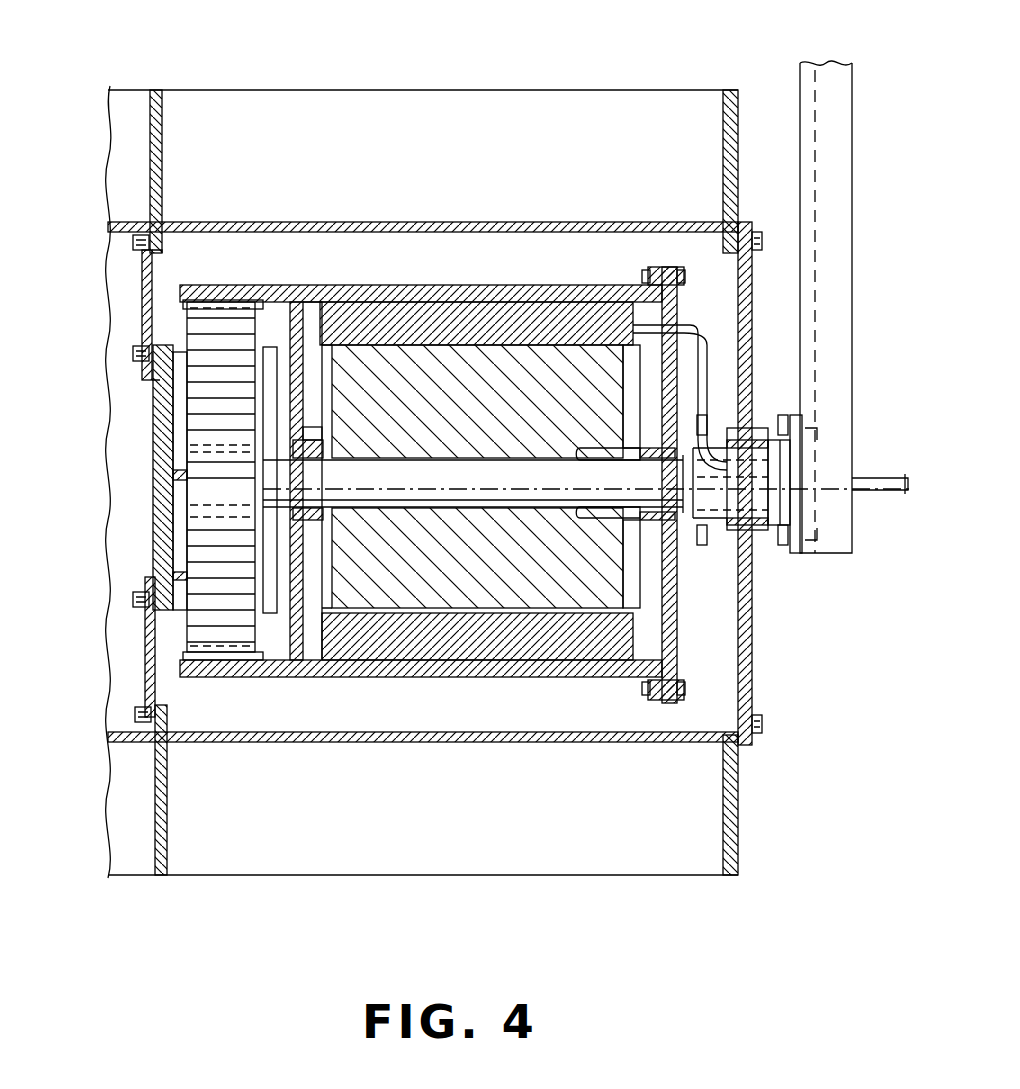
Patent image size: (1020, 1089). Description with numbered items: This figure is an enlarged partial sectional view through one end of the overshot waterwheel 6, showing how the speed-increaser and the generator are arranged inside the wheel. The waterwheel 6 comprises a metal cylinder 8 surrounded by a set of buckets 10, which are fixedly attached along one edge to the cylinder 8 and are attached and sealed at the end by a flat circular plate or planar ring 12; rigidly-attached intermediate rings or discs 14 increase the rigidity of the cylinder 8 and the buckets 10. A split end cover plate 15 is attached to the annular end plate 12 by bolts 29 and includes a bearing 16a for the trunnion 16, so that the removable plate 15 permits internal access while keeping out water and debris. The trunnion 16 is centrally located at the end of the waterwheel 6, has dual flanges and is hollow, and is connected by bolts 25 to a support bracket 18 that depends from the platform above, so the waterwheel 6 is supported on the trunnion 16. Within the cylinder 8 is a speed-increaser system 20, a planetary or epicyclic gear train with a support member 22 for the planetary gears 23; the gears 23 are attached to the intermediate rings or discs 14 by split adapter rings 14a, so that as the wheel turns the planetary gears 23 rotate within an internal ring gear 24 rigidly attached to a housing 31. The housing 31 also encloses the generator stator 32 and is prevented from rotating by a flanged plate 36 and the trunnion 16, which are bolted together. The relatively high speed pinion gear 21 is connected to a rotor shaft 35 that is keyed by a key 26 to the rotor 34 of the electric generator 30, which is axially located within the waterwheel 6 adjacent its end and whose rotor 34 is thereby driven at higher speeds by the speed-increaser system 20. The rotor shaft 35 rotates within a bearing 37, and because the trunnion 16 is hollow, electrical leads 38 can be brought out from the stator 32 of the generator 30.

The overshot waterwheel 6 is at (462, 90).
The metal cylinder 8 is at (452, 222).
The buckets 10 is at (401, 492).
The annular end plate 12 is at (740, 178).
The intermediate rings or discs 14 is at (160, 90).
The split adapter rings 14a is at (140, 262).
The split end cover plate 15 is at (778, 320).
The trunnion 16 is at (752, 422).
The bearing 16a is at (760, 548).
The support bracket 18 is at (852, 205).
The speed-increaser system 20 is at (178, 480).
The pinion gear 21 is at (207, 512).
The support member 22 is at (157, 418).
The planetary gears 23 is at (250, 392).
The internal ring gear 24 is at (218, 285).
The bolts 25 is at (652, 432).
The key 26 is at (548, 497).
The bolts 29 is at (762, 242).
The electric generator 30 is at (437, 300).
The housing 31 is at (552, 292).
The generator stator 32 is at (486, 339).
The rotor 34 is at (486, 419).
The rotor shaft 35 is at (415, 500).
The flanged plate 36 is at (677, 313).
The bearing 37 is at (308, 440).
The electrical leads 38 is at (707, 386).